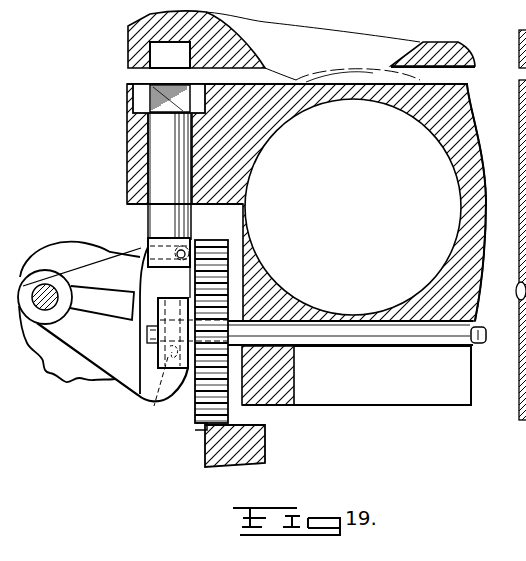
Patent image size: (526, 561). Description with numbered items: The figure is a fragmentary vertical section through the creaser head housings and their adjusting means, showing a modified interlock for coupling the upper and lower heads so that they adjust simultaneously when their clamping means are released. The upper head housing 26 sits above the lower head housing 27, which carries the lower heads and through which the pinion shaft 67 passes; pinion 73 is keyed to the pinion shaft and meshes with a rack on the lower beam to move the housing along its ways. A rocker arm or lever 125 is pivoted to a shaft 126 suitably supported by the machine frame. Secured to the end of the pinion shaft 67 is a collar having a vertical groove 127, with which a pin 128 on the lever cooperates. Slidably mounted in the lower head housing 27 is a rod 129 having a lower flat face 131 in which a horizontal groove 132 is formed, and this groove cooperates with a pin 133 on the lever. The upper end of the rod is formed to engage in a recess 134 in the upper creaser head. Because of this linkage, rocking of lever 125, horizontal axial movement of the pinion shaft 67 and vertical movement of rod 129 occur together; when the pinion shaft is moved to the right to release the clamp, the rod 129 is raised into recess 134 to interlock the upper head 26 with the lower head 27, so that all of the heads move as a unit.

The upper head housing 26 is at (138, 35).
The recess 134 is at (157, 57).
The rod 129 is at (157, 133).
The lower head housing 27 is at (130, 180).
The shaft 126 is at (46, 292).
The lower flat face 131 is at (150, 247).
The pin 133 is at (197, 243).
The horizontal groove 132 is at (157, 267).
The vertical groove 127 is at (150, 357).
The rocker arm 125 is at (127, 365).
The pin 128 is at (525, 327).
The pinion 73 is at (197, 420).
The pinion shaft 67 is at (480, 343).